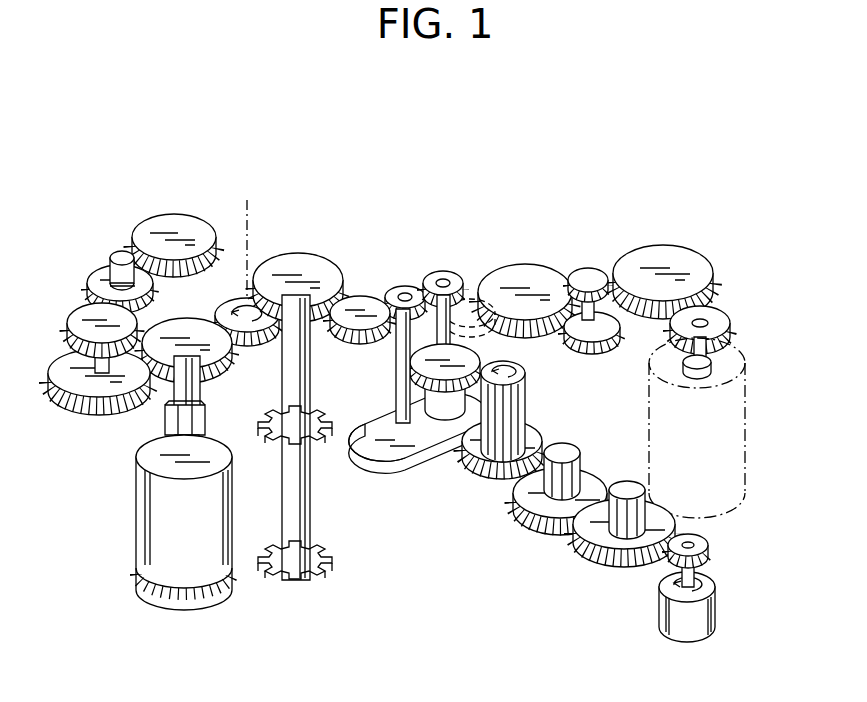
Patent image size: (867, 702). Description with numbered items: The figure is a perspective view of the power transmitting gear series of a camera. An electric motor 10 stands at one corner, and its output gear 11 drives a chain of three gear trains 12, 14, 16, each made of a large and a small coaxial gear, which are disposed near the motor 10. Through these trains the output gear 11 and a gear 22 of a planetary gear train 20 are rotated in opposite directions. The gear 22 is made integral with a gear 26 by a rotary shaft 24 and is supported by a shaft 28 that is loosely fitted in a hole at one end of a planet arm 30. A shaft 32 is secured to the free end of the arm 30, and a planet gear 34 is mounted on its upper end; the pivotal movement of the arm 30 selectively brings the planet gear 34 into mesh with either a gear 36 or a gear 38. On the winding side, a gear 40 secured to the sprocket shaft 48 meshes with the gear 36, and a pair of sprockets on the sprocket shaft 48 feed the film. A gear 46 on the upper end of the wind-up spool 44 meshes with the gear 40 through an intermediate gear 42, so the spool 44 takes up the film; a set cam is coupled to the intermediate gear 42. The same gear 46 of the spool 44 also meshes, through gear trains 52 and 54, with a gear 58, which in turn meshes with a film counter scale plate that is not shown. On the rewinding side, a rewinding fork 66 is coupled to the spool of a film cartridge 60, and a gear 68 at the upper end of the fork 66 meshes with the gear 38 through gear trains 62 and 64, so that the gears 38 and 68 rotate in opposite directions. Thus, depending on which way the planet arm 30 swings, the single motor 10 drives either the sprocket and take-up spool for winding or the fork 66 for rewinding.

The electric motor 10 is at (658, 605).
The output gear 11 is at (708, 545).
The gear train 12 is at (670, 515).
The gear train 14 is at (590, 470).
The gear train 16 is at (535, 430).
The planetary gear train 20 is at (392, 390).
The gear 22 is at (500, 360).
The rotary shaft 24 is at (430, 355).
The gear 26 is at (443, 271).
The shaft 28 is at (442, 425).
The planet arm 30 is at (395, 450).
The shaft 32 is at (396, 372).
The planet gear 34 is at (405, 286).
The gear 36 is at (360, 295).
The gear 38 is at (525, 265).
The gear 40 is at (290, 255).
The intermediate gear 42 is at (232, 305).
The wind-up spool 44 is at (137, 545).
The gear 46 is at (228, 360).
The sprocket shaft 48 is at (300, 530).
The gear train 52 is at (90, 312).
The gear train 54 is at (105, 272).
The gear 58 is at (170, 215).
The film cartridge 60 is at (746, 425).
The gear train 62 is at (588, 268).
The gear train 64 is at (663, 247).
The rewinding fork 66 is at (712, 368).
The gear 68 is at (728, 315).